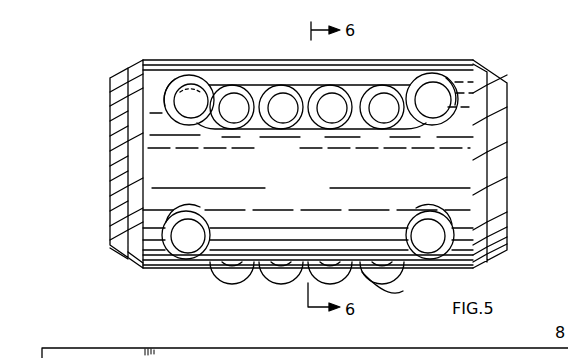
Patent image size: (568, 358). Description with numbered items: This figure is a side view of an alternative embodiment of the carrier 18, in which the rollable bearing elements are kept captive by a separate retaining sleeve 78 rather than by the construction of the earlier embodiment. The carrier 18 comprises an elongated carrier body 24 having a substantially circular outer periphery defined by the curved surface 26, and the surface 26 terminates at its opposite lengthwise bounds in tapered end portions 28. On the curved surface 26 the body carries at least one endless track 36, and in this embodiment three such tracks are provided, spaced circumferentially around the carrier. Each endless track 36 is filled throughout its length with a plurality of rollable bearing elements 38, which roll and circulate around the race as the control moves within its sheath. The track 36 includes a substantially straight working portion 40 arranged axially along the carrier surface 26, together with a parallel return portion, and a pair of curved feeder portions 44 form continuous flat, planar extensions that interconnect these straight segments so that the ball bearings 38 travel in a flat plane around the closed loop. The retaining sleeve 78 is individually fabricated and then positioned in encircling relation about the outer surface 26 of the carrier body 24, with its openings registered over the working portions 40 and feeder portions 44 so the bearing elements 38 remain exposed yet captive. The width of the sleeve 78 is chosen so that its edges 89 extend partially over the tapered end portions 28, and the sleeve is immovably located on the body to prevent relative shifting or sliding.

The carrier 18 is at (128, 52).
The carrier body 24 is at (305, 208).
The curved surface 26 is at (176, 270).
The tapered end portions 28 is at (113, 240).
The endless track 36 is at (228, 130).
The bearing elements 38 is at (378, 130).
The working portion 40 is at (262, 84).
The curved feeder portions 44 is at (166, 95).
The retaining sleeve 78 is at (466, 187).
The edges 89 is at (485, 112).